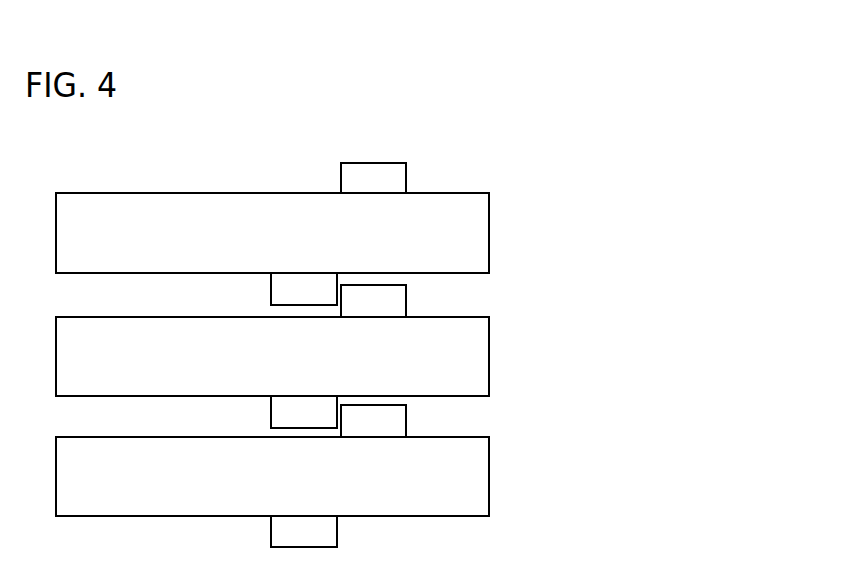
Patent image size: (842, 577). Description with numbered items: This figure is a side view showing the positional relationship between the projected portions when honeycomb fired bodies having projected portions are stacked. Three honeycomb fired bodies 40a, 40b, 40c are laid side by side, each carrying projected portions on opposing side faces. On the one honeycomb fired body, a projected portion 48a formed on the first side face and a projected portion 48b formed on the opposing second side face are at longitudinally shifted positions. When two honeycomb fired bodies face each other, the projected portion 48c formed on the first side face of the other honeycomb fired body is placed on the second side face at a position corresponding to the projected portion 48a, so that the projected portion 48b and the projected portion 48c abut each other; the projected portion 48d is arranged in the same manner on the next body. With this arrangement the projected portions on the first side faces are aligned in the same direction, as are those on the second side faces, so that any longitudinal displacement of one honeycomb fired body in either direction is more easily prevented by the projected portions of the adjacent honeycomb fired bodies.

The first layer 40a is at (477, 232).
The second layer 40b is at (477, 355).
The third layer 40c is at (477, 475).
The projected portion 48a is at (395, 179).
The projected portion 48b is at (282, 296).
The projected portion 48c is at (395, 302).
The fourth conductive pad 48d is at (282, 416).